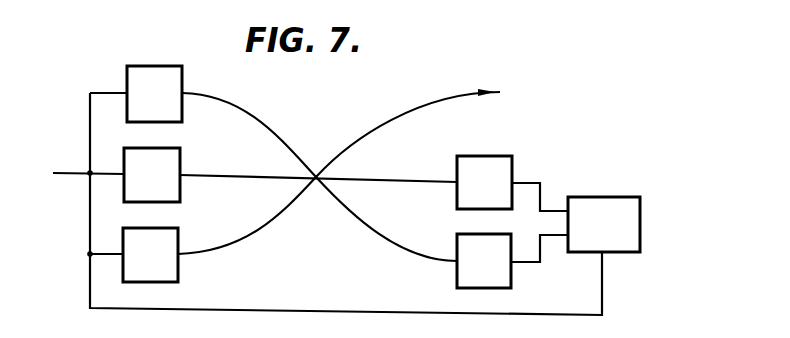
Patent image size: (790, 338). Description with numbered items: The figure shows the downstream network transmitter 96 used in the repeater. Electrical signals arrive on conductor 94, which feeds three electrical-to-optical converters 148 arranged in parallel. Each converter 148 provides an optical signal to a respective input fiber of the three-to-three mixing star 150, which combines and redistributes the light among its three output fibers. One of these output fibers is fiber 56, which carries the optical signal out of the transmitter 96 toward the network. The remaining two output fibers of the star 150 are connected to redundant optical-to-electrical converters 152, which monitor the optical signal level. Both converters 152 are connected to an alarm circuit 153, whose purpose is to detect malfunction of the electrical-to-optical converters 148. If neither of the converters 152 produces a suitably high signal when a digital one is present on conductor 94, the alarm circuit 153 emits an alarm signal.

The conductor 94 is at (66, 172).
The electrical-to-optical converters 148 is at (182, 110).
The 3-to-3 mixing star 150 is at (359, 179).
The fiber 56 is at (497, 94).
The downstream network transmitter 96 is at (549, 210).
The optical-to-electrical converters 152 is at (457, 252).
The alarm circuit 153 is at (640, 225).